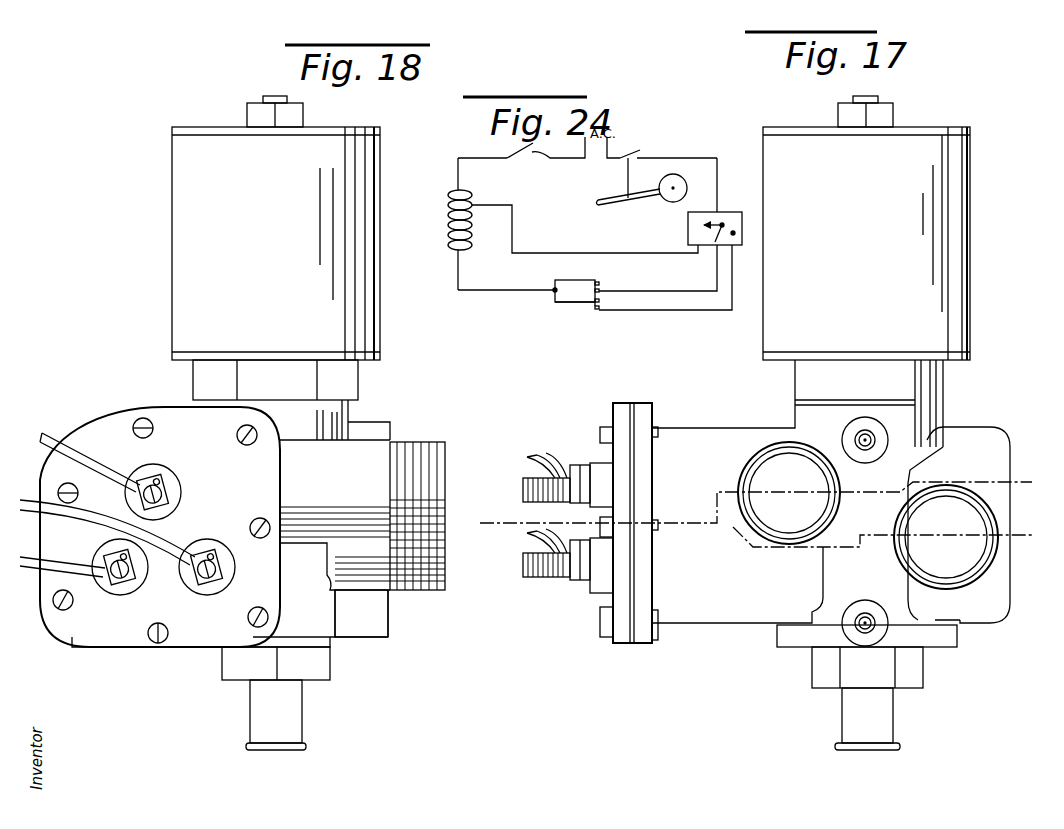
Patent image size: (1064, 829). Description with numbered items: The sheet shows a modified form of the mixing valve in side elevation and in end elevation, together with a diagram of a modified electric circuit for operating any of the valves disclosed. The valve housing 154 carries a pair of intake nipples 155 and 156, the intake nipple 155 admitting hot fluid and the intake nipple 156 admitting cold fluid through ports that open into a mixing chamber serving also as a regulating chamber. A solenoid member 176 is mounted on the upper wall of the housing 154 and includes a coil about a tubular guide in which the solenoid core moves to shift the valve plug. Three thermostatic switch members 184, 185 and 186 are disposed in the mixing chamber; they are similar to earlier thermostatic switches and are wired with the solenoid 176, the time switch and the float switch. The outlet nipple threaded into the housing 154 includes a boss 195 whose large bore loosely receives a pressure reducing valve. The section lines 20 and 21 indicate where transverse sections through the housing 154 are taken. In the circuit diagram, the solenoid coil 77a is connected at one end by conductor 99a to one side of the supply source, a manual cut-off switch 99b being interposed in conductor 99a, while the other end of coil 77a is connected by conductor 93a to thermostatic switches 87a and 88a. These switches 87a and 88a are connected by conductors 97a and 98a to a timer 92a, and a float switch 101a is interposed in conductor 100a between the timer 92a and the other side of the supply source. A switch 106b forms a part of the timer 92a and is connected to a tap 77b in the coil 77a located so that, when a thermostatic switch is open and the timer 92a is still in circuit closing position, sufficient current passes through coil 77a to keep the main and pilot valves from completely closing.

In FIG. 18, the solenoid member 176 is at (180, 222).
In FIG. 17, the solenoid member 176 is at (972, 268).
In FIG. 18, the valve housing 154 is at (128, 420).
In FIG. 17, the valve housing 154 is at (698, 424).
In FIG. 18, the intake nipple 155 is at (430, 440).
In FIG. 17, the intake nipple 155 is at (775, 545).
In FIG. 18, the intake nipple 156 is at (418, 596).
In FIG. 17, the intake nipple 156 is at (965, 578).
In FIG. 18, the thermostatic switch member 184 is at (182, 500).
In FIG. 17, the thermostatic switch member 184 is at (588, 465).
In FIG. 18, the thermostatic switch member 185 is at (115, 589).
In FIG. 18, the thermostatic switch member 186 is at (208, 589).
In FIG. 17, the thermostatic switch member 186 is at (582, 577).
In FIG. 18, the boss 195 is at (318, 676).
In FIG. 17, the boss 195 is at (822, 680).
In FIG. 17, the section line 20- 20 is at (500, 553).
In FIG. 17, the section line 21- 21 is at (512, 520).
In FIG. 24, the solenoid coil 77a is at (445, 235).
In FIG. 24, the tap 77b is at (475, 205).
In FIG. 24, the conductor 99a is at (472, 158).
In FIG. 24, the manual cut-off switch 99b is at (548, 160).
In FIG. 24, the conductor 100a is at (712, 158).
In FIG. 24, the float switch 101a is at (650, 152).
In FIG. 24, the timer 92a is at (728, 212).
In FIG. 24, the switch 106b is at (698, 228).
In FIG. 24, the thermostatic switch 87a is at (580, 280).
In FIG. 24, the thermostatic switch 88a is at (573, 303).
In FIG. 24, the conductor 93a is at (482, 293).
In FIG. 24, the conductor 97a is at (650, 291).
In FIG. 24, the conductor 98a is at (655, 310).